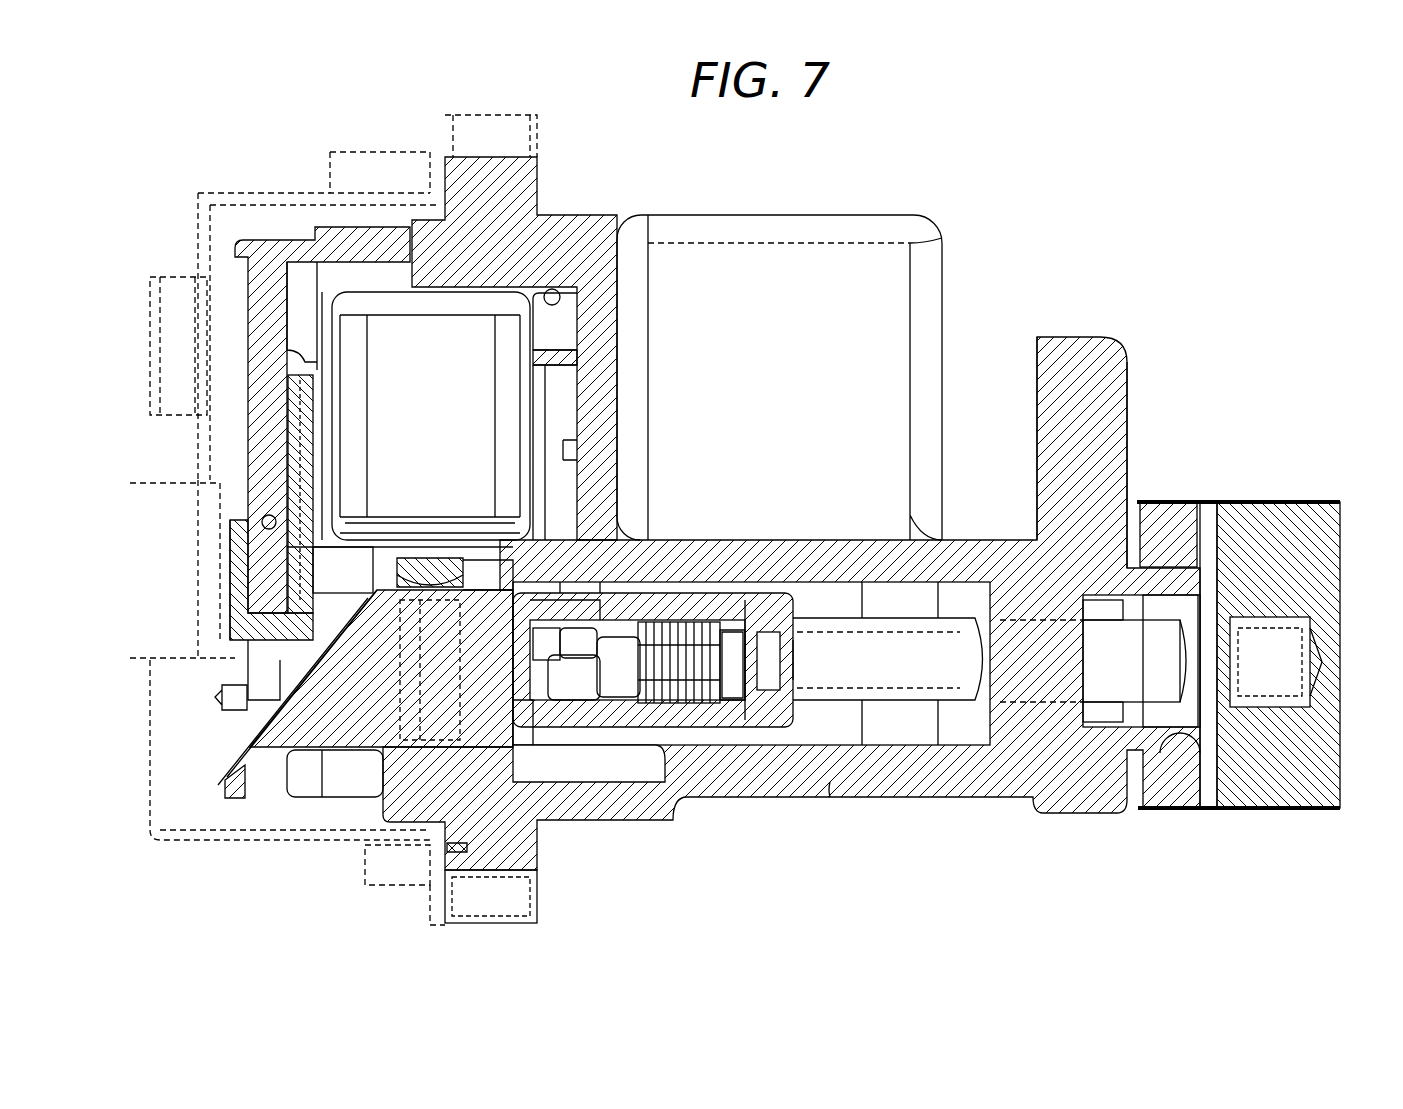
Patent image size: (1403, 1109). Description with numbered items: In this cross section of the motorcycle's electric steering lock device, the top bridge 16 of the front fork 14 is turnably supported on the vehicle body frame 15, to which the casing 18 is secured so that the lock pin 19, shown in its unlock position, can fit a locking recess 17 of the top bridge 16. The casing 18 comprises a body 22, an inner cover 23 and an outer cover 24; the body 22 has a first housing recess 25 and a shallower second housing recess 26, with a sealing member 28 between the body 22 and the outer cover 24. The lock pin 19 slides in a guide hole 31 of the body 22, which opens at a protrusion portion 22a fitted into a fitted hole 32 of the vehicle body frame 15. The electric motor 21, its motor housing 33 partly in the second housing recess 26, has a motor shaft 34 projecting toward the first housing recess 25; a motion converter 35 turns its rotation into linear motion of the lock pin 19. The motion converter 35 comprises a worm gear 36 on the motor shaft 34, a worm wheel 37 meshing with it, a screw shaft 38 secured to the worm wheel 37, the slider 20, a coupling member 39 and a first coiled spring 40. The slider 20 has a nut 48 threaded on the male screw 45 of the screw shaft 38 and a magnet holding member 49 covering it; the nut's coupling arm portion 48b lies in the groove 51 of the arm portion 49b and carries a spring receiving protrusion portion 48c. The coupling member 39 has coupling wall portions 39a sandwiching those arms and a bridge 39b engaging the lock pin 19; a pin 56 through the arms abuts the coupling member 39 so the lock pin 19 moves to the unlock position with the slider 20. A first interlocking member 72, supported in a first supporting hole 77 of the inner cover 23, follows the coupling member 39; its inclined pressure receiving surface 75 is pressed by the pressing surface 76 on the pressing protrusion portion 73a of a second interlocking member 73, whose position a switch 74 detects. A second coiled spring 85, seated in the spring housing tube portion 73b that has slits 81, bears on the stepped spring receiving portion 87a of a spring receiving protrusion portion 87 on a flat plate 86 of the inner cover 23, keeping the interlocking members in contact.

The front fork 14 is at (1308, 498).
The vehicle body frame 15 is at (1170, 520).
The top bridge 16 is at (1245, 525).
The locking recess 17 is at (1312, 690).
The casing 18 is at (950, 472).
The lock pin 19 is at (1120, 675).
The slider 20 is at (720, 600).
The electric motor 21 is at (431, 416).
The body 22 is at (600, 424).
The protrusion portion 22a is at (1208, 540).
The inner cover 23 is at (268, 250).
The outer cover 24 is at (205, 840).
The first housing recess 25 is at (830, 798).
The second housing recess 26 is at (558, 290).
The sealing member 28 is at (450, 848).
The guide hole 31 is at (1035, 620).
The fitted hole 32 is at (1207, 745).
The motor housing 33 is at (512, 392).
The motor shaft 34 is at (430, 565).
The motion converter 35 is at (540, 563).
The worm gear 36 is at (375, 590).
The worm wheel 37 is at (491, 896).
The screw shaft 38 is at (865, 600).
The coupling member 39 is at (808, 712).
The coupling wall portion 39a is at (745, 582).
The bridge 39b is at (795, 720).
The first coiled spring 40 is at (620, 690).
The male screw 45 is at (790, 585).
The nut 48 is at (518, 657).
The coupling arm portion 48b is at (600, 700).
The spring receiving protrusion portion 48c is at (700, 700).
The magnet holding member 49 is at (530, 745).
The arm portion 49b is at (620, 590).
The groove 51 is at (536, 745).
The pin 56 is at (590, 690).
The first interlocking member 72 is at (290, 753).
The second interlocking member 73 is at (237, 600).
The pressing protrusion portion 73a is at (280, 665).
The spring housing tube portion 73b is at (232, 548).
The switch 74 is at (258, 697).
The pressure receiving surface 75 is at (245, 732).
The pressing surface 76 is at (330, 750).
The first supporting hole 77 is at (400, 745).
The slits 81 is at (262, 522).
The second coiled spring 85 is at (302, 553).
The flat plate 86 is at (253, 407).
The spring receiving protrusion portion 87 is at (300, 470).
The spring receiving portion 87a is at (315, 465).